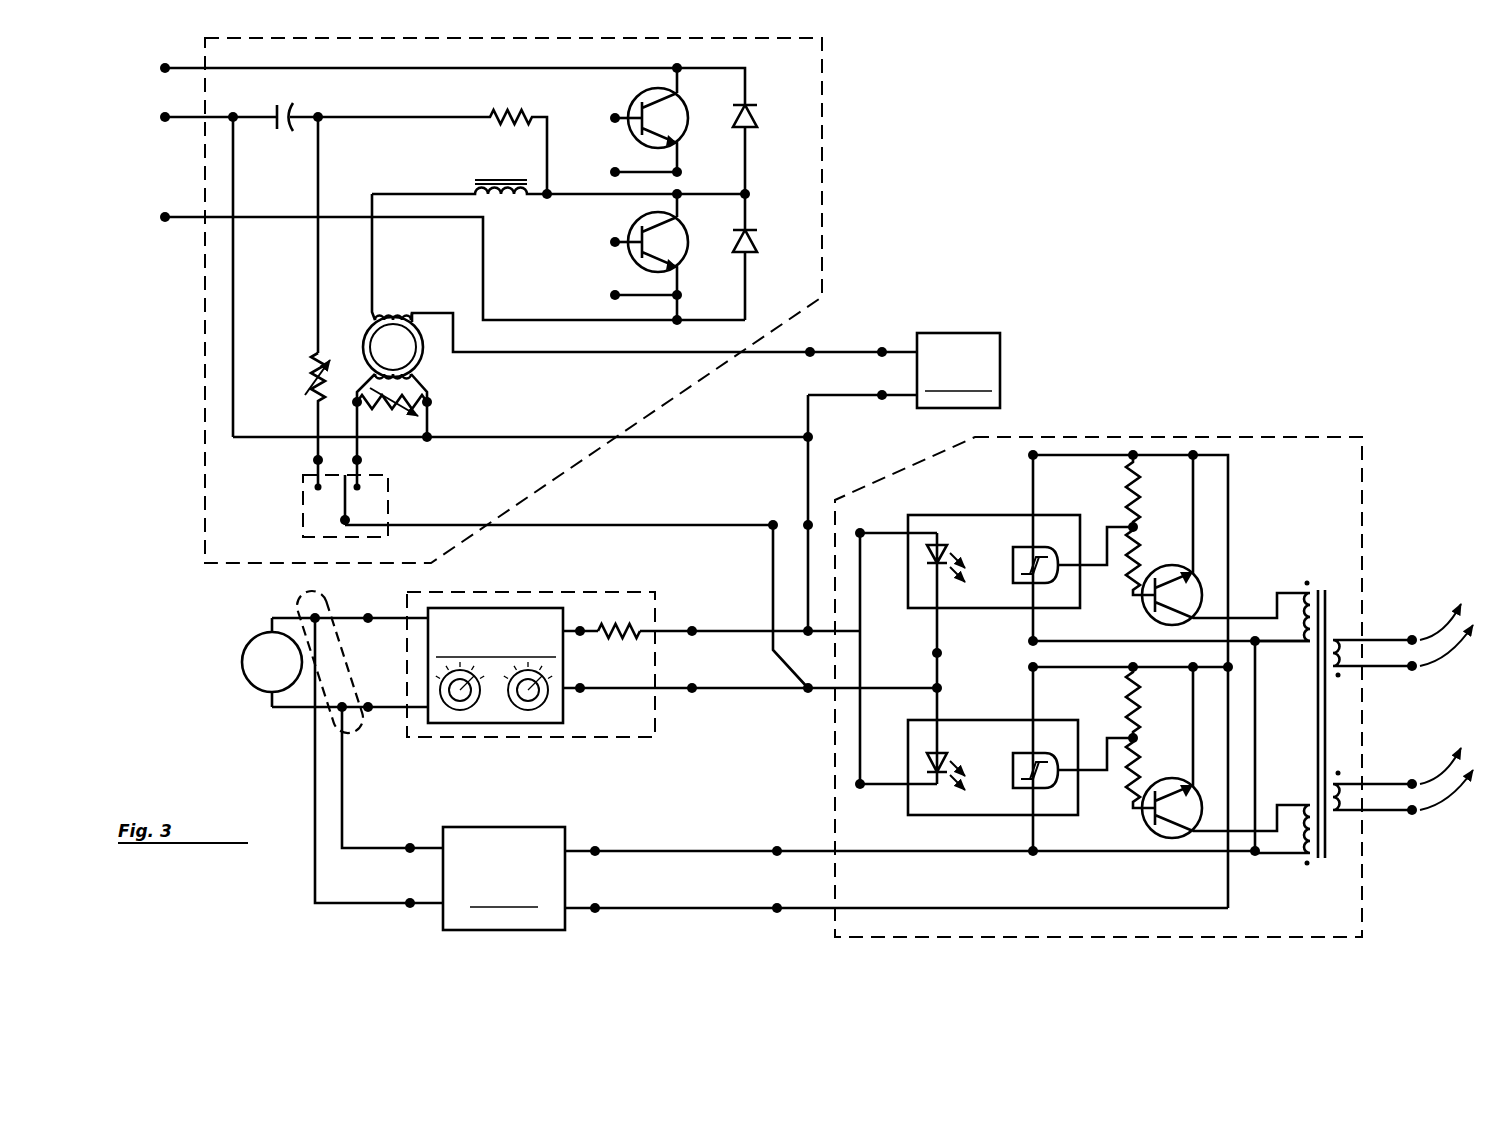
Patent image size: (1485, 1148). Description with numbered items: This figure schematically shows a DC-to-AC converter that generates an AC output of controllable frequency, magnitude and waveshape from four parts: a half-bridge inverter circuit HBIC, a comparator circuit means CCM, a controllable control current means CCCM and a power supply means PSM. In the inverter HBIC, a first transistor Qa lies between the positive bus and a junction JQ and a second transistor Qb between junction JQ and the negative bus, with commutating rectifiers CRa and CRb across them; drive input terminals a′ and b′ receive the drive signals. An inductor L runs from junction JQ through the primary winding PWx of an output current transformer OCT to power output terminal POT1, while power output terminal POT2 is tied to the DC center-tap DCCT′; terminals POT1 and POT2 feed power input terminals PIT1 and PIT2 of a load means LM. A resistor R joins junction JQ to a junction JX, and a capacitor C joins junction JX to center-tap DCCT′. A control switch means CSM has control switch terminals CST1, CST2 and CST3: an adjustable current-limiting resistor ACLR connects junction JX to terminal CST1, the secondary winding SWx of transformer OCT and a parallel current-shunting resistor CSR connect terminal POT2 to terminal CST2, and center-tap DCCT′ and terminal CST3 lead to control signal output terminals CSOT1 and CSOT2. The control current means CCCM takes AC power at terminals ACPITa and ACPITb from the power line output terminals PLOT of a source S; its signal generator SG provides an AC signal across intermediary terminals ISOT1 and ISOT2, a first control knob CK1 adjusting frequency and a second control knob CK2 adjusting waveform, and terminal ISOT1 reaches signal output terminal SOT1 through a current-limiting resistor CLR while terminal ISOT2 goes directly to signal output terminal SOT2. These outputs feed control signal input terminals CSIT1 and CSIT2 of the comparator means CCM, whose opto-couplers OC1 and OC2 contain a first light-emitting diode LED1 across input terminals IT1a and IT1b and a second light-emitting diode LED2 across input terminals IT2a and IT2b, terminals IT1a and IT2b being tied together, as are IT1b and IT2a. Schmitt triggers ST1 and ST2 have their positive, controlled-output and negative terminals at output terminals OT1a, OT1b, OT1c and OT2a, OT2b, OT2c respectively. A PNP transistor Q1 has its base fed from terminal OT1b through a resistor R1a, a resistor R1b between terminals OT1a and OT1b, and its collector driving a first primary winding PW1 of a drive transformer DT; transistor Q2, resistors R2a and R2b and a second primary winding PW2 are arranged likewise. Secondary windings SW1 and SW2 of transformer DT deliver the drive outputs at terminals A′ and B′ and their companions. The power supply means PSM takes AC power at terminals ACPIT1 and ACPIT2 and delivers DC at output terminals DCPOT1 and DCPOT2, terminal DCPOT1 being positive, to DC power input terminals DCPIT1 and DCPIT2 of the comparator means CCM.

The half-bridge inverter circuit HBIC is at (830, 207).
The DC center-tap DCCT′ is at (163, 120).
The capacitor C is at (285, 138).
The junction JX is at (324, 114).
The resistor R is at (506, 110).
The inductor L is at (478, 176).
The junction JQ is at (686, 194).
The first transistor Qa is at (684, 104).
The second transistor Qb is at (690, 246).
The drive input terminal a′ is at (608, 112).
The drive input terminal b′ is at (608, 236).
The first commutating rectifier CRa is at (760, 118).
The commutating rectifier CRb is at (760, 244).
The primary winding PWx is at (397, 316).
The output current transformer OCT is at (434, 358).
The adjustable current-limiting resistor ACLR is at (308, 372).
The secondary winding SWx is at (398, 388).
The current-shunting resistor CSR is at (391, 414).
The first control switch terminal CST1 is at (326, 458).
The second control switch terminal CST2 is at (365, 463).
The control switch terminal CST3 is at (347, 525).
The control switch means CSM is at (302, 512).
The power output terminal POT1 is at (814, 349).
The power output terminal POT2 is at (806, 435).
The power input terminal PIT1 is at (885, 349).
The power input terminal PIT2 is at (882, 392).
The load means LM is at (1002, 365).
The control signal output terminal CSOT1 is at (806, 522).
The control signal output terminal CSOT2 is at (773, 535).
The source S is at (279, 672).
The power line output terminals PLOT is at (330, 730).
The AC power input terminal ACPITa is at (367, 615).
The AC power input terminal ACPITb is at (370, 712).
The AC power input terminal ACPIT1 is at (408, 905).
The AC power input terminal ACPIT2 is at (410, 845).
The controllable control current means CCCM is at (563, 742).
The signal generator SG is at (487, 603).
The first control knob CK1 is at (440, 690).
The second control knob CK2 is at (548, 705).
The intermediary signal output terminal ISOT1 is at (579, 628).
The intermediary signal output terminal ISOT2 is at (581, 686).
The current-limiting resistor CLR is at (607, 618).
The signal output terminal SOT1 is at (694, 628).
The signal output terminal SOT2 is at (694, 690).
The control signal input terminal CSIT1 is at (806, 634).
The control signal input terminal CSIT2 is at (806, 690).
The power supply means PSM is at (458, 825).
The DC power output terminal DCPOT1 is at (593, 912).
The DC power output terminal DCPOT2 is at (593, 847).
The DC power input terminal DCPIT1 is at (775, 912).
The DC power input terminal DCPIT2 is at (775, 854).
The comparator circuit means CCM is at (1152, 433).
The first optocoupler OC1 is at (949, 508).
The second opto-coupler OC2 is at (984, 823).
The first light-emitting diode LED1 is at (944, 544).
The second light-emitting diode LED2 is at (945, 777).
The first Schmitt trigger ST1 is at (1012, 566).
The second Schmitt trigger ST2 is at (1012, 771).
The input terminal IT1a is at (862, 530).
The input terminal IT1b is at (934, 655).
The input terminal IT2a is at (935, 690).
The input terminal IT2b is at (858, 782).
The output terminal OT1a is at (1030, 457).
The output terminal OT1b is at (1130, 525).
The output terminal OT1c is at (1030, 640).
The output terminal OT2a is at (1030, 669).
The output terminal OT2b is at (1130, 736).
The output terminal OT2c is at (1034, 855).
The resistor R1a is at (1128, 570).
The resistor R1b is at (1136, 487).
The resistor R2a is at (1128, 788).
The resistor R2b is at (1136, 700).
The first PNP transistor Q1 is at (1202, 585).
The second PNP transistor Q2 is at (1202, 800).
The first primary winding PW1 is at (1299, 592).
The second primary winding PW2 is at (1308, 856).
The first secondary winding SW1 is at (1342, 638).
The second secondary winding SW2 is at (1348, 792).
The drive transformer DT is at (1337, 862).
The drive output terminal A′ is at (1413, 636).
The drive output terminal B′ is at (1412, 780).